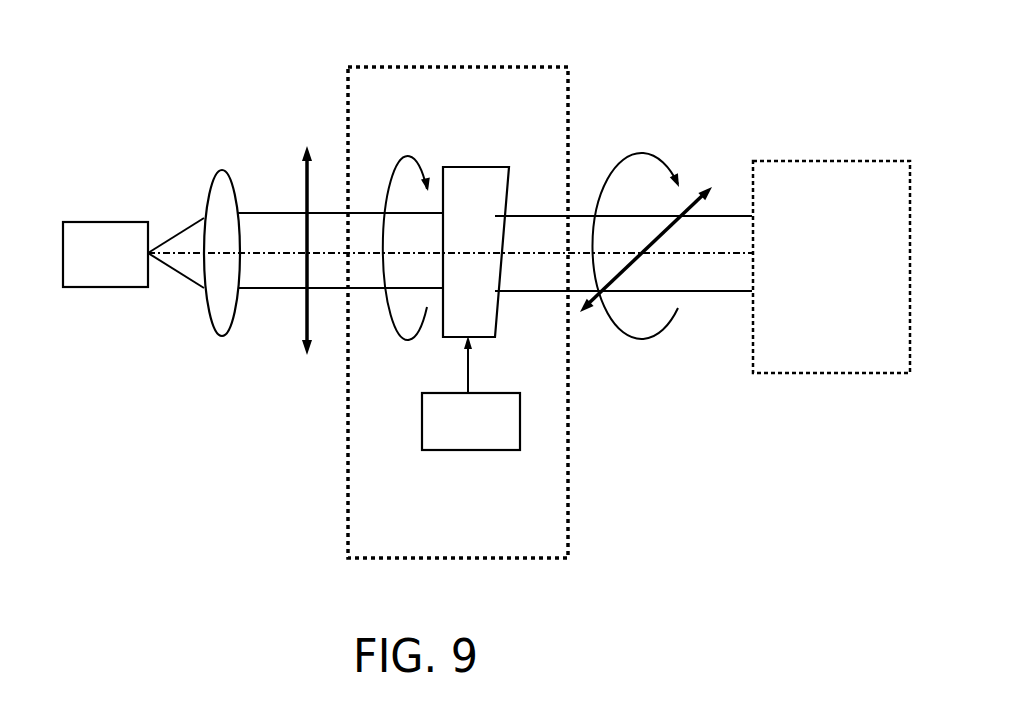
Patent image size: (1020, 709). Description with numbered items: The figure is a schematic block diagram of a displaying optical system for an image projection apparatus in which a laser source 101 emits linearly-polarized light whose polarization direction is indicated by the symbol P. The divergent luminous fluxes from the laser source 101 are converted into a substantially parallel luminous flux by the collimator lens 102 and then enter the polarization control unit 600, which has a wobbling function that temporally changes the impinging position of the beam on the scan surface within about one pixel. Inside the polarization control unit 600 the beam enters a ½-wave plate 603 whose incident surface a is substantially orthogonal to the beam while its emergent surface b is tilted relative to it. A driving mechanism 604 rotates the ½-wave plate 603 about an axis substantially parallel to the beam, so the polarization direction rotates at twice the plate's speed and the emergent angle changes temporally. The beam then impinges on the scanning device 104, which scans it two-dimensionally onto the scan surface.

The laser source 101 is at (87, 263).
The collimator lens 102 is at (222, 203).
The polarization direction P is at (298, 200).
The polarization control unit 600 is at (467, 65).
The ½-wave plate 603 is at (460, 167).
The driving mechanism 604 is at (461, 440).
The scanning device 104 is at (835, 158).